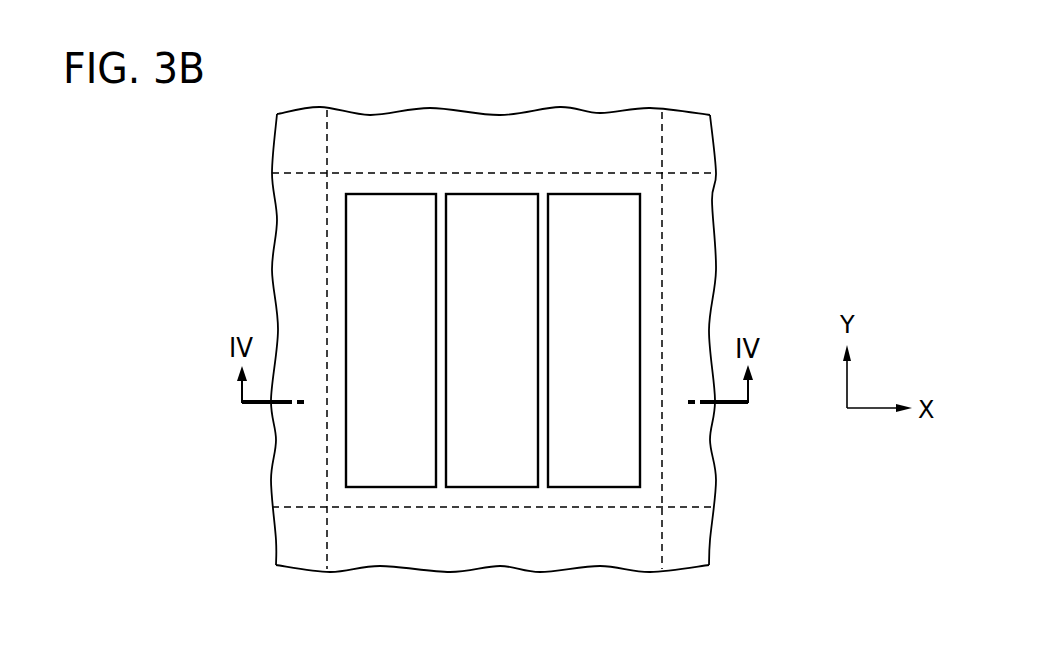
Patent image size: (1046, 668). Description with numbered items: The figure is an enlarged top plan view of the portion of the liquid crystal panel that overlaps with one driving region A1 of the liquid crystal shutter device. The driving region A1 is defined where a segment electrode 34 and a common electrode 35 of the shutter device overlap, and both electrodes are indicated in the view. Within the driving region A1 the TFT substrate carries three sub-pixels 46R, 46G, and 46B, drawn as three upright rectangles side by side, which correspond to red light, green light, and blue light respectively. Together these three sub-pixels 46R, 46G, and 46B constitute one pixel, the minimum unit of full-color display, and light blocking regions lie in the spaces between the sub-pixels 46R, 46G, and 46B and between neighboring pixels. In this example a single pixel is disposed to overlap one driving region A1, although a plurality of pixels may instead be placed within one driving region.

The segment electrode 34 is at (502, 143).
The common electrode 35 is at (300, 290).
The driving region A1 is at (634, 185).
The sub-pixel 46R is at (385, 453).
The sub-pixel 46G is at (493, 452).
The sub-pixel 46B is at (595, 450).